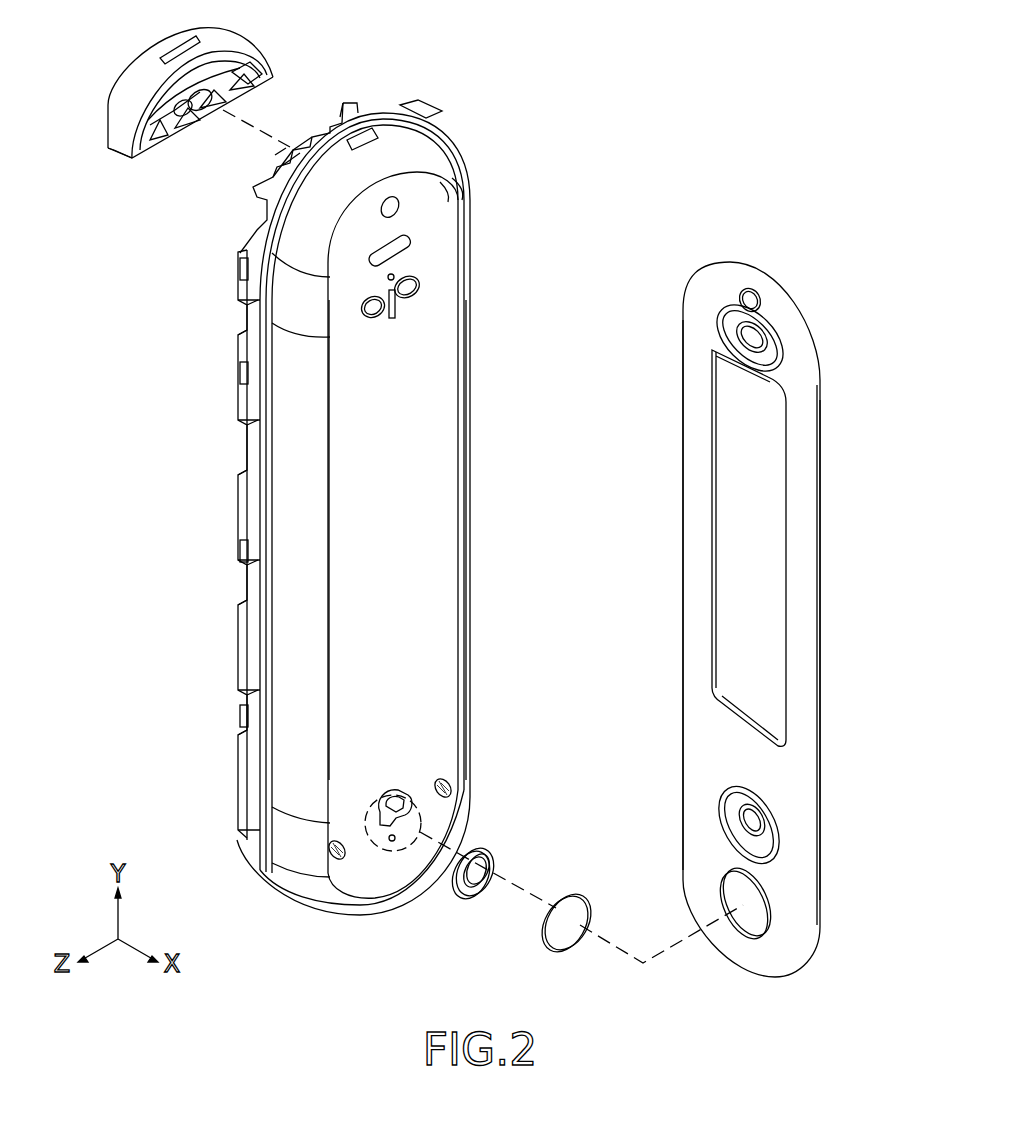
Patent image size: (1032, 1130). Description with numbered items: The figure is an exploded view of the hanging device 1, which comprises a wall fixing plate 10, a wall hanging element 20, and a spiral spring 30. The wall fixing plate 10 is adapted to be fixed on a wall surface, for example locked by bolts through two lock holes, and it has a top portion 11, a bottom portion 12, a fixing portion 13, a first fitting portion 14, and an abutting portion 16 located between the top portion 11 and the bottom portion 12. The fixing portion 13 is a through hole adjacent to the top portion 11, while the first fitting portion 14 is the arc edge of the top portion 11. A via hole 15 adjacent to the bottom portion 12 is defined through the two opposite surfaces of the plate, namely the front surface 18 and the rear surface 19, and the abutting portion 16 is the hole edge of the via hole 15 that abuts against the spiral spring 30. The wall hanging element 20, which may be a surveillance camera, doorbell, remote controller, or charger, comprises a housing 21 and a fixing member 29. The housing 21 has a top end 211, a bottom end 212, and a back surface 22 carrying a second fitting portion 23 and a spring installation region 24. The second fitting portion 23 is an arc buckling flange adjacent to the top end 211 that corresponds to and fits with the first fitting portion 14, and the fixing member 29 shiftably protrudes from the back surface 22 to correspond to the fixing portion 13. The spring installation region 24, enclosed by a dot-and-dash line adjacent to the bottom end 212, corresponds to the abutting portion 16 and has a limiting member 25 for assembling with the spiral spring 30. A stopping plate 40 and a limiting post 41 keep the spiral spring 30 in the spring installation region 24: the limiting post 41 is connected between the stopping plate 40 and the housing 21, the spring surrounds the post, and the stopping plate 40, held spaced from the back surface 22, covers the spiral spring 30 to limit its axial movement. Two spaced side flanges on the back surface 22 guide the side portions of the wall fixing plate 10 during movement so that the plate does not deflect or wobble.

The hanging device 1 is at (877, 70).
The wall fixing plate 10 is at (751, 603).
The top portion 11 is at (712, 272).
The bottom portion 12 is at (784, 962).
The fixing portion 13 is at (750, 285).
The first fitting portion 14 is at (800, 297).
The via hole 15 is at (797, 943).
The abutting portion 16 is at (740, 935).
The front surface 18 is at (800, 577).
The rear surface 19 is at (823, 622).
The wall hanging element 20 is at (178, 150).
The housing 21 is at (326, 523).
The top end 211 is at (401, 150).
The bottom end 212 is at (326, 898).
The back surface 22 is at (367, 566).
The second fitting portion 23 is at (462, 187).
The spring installation region 24 is at (402, 848).
The limiting member 25 is at (363, 852).
The fixing member 29 is at (196, 100).
The spiral spring 30 is at (490, 862).
The stopping plate 40 is at (571, 898).
The limiting post 41 is at (555, 895).